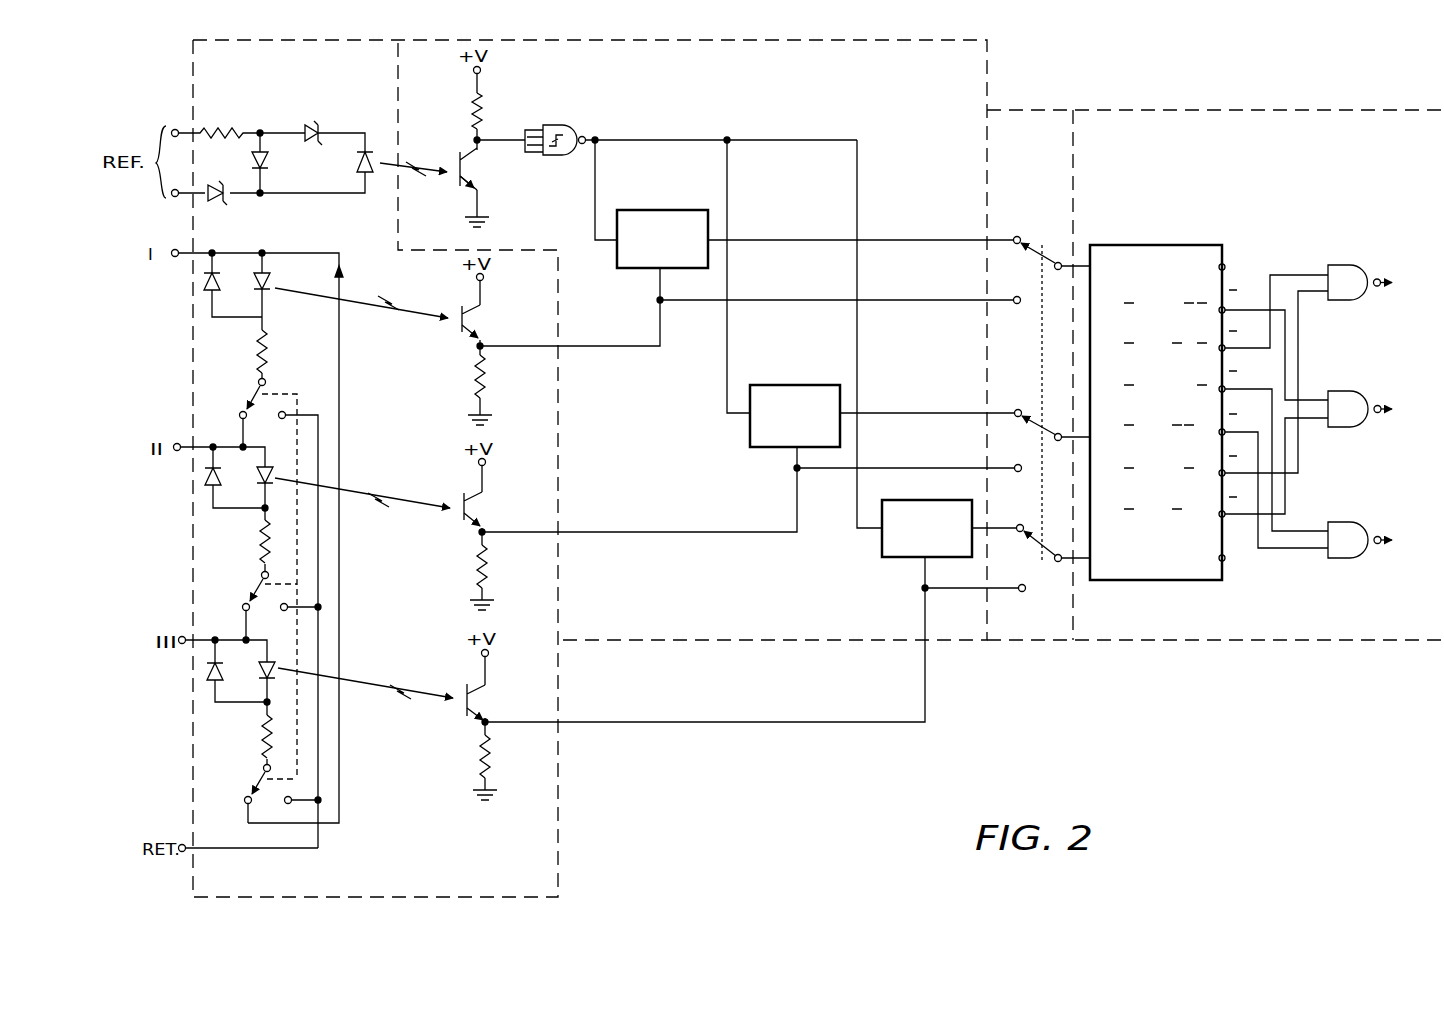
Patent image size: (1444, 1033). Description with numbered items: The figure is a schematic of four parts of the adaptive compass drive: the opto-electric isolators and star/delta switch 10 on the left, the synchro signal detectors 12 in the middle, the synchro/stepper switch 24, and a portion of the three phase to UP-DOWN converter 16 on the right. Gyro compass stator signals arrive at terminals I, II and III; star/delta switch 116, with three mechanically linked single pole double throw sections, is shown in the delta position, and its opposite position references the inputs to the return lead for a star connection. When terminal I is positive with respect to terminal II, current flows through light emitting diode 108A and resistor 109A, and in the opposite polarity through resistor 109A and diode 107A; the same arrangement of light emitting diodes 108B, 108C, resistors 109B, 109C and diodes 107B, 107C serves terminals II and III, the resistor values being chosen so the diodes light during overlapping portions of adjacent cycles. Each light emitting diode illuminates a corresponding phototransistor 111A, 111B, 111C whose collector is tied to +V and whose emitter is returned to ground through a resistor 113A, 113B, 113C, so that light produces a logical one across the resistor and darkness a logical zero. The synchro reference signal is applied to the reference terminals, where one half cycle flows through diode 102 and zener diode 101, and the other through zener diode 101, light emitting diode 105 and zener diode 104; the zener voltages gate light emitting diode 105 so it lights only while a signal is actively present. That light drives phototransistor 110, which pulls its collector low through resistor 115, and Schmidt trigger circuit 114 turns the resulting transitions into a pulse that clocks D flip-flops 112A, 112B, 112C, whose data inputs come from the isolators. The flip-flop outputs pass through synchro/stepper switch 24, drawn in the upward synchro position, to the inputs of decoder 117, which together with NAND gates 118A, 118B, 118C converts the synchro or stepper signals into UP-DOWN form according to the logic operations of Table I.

The opto-electric isolators and star/delta switch 10 is at (560, 850).
The synchro signal detectors 12 is at (989, 46).
The three phase to UP-DOWN converter 16 is at (1248, 113).
The synchro/stepper switch 24 is at (1040, 118).
The zener diode 101 is at (225, 201).
The diode 102 is at (266, 160).
The zener diode 104 is at (318, 124).
The light emitting diode 105 is at (382, 143).
The diode 107A is at (212, 298).
The diode 107B is at (213, 493).
The diode 107C is at (215, 688).
The light emitting diode 108A is at (272, 284).
The light emitting diode 108B is at (275, 478).
The light emitting diode 108C is at (280, 664).
The resistor 109A is at (270, 348).
The resistor 109B is at (260, 557).
The resistor 109C is at (260, 742).
The phototransistor 110 is at (472, 172).
The phototransistor 111A is at (478, 338).
The phototransistor 111B is at (458, 496).
The phototransistor 111C is at (472, 716).
The D flip-flop 112A is at (660, 210).
The D flip-flop 112B is at (800, 385).
The D flip-flop 112C is at (880, 550).
The resistor 113A is at (487, 373).
The resistor 113B is at (489, 553).
The resistor 113C is at (492, 745).
The Schmidt trigger circuit 114 is at (577, 122).
The resistor 115 is at (484, 110).
The star/delta switch 116 is at (298, 405).
The decoder 117 is at (1176, 245).
The NAND gate 118A is at (1336, 265).
The NAND gate 118B is at (1344, 391).
The NAND gate 118C is at (1345, 522).